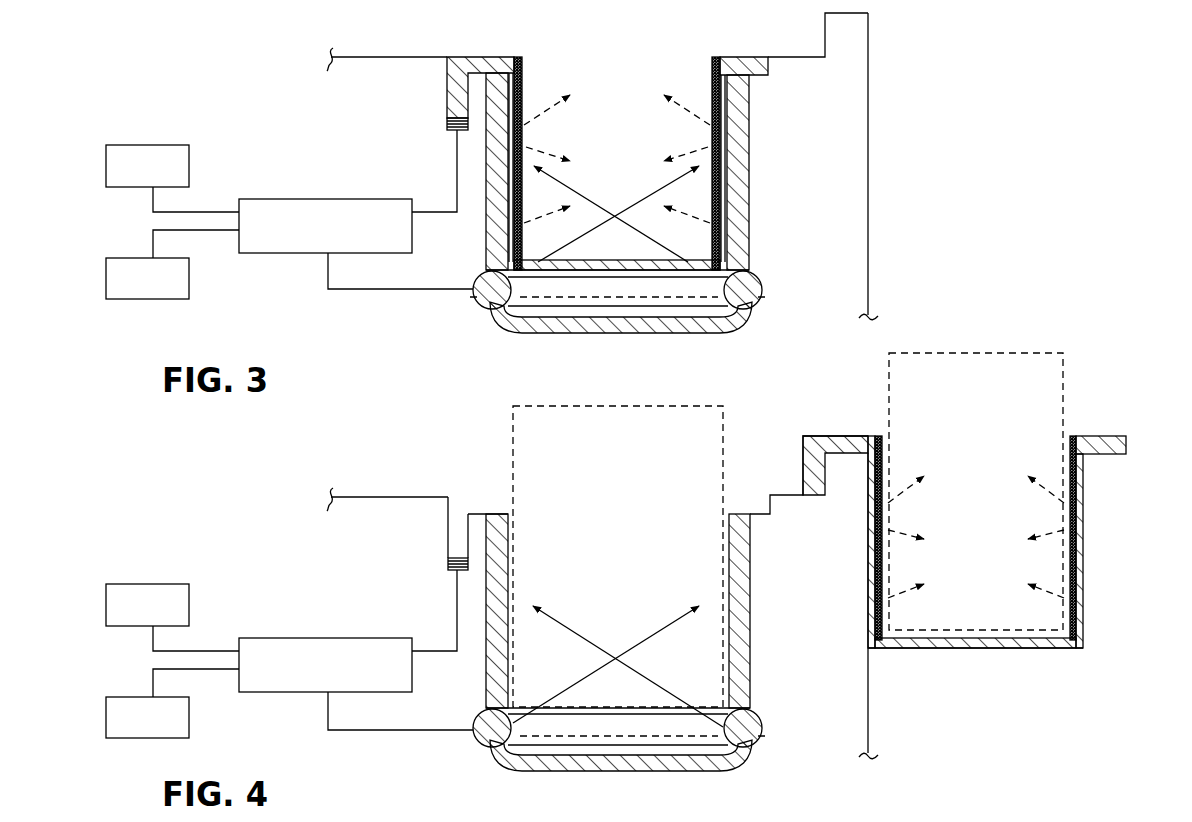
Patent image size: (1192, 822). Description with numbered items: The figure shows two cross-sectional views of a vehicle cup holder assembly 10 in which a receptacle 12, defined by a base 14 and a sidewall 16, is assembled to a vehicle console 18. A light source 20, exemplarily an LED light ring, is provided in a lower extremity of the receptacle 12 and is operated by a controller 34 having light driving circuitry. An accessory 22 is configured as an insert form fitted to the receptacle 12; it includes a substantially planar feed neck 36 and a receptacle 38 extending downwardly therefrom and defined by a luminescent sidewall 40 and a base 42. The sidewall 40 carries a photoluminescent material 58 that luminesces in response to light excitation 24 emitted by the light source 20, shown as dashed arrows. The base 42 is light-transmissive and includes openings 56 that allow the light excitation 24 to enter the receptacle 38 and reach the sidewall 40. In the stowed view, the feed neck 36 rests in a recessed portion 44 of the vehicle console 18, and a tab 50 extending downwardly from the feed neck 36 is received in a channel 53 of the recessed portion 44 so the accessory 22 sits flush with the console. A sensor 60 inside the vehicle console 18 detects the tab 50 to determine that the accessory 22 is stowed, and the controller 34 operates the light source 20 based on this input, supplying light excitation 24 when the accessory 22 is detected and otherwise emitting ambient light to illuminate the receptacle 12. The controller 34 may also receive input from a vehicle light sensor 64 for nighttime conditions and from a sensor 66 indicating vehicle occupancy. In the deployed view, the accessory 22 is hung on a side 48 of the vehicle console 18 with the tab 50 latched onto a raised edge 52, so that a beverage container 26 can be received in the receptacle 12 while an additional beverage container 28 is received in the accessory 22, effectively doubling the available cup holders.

In FIG. 3, the vehicle cup holder assembly 10 is at (941, 84).
In FIG. 4, the vehicle cup holder assembly 10 is at (1141, 371).
In FIG. 4, the receptacle 12 is at (539, 653).
In FIG. 3, the base 14 is at (722, 331).
In FIG. 4, the base 14 is at (722, 770).
In FIG. 3, the sidewall 16 is at (756, 208).
In FIG. 4, the sidewall 16 is at (753, 598).
In FIG. 3, the vehicle console 18 is at (382, 57).
In FIG. 4, the vehicle console 18 is at (382, 497).
In FIG. 3, the light source 20 is at (762, 280).
In FIG. 4, the light source 20 is at (755, 730).
In FIG. 3, the accessory 22 is at (503, 43).
In FIG. 4, the accessory 22 is at (1081, 417).
In FIG. 3, the light excitation 24 is at (648, 198).
In FIG. 4, the light excitation 24 is at (648, 638).
In FIG. 4, the beverage container 26 is at (511, 460).
In FIG. 4, the additional beverage container 28 is at (1068, 386).
In FIG. 3, the controller 34 is at (306, 198).
In FIG. 4, the controller 34 is at (306, 637).
In FIG. 3, the feed neck 36 is at (742, 65).
In FIG. 4, the feed neck 36 is at (1107, 440).
In FIG. 3, the receptacle 38 is at (596, 97).
In FIG. 4, the receptacle 38 is at (1001, 560).
In FIG. 3, the luminescent sidewall 40 is at (730, 140).
In FIG. 4, the luminescent sidewall 40 is at (1086, 580).
In FIG. 3, the base 42 is at (733, 272).
In FIG. 4, the base 42 is at (1072, 645).
In FIG. 4, the recessed portion 44 is at (485, 512).
In FIG. 3, the side 48 is at (842, 173).
In FIG. 4, the side 48 is at (843, 695).
In FIG. 3, the tab 50 is at (455, 93).
In FIG. 4, the tab 50 is at (815, 482).
In FIG. 3, the raised edge 52 is at (847, 43).
In FIG. 4, the raised edge 52 is at (858, 472).
In FIG. 4, the channel 53 is at (455, 536).
In FIG. 3, the openings 56 is at (597, 267).
In FIG. 4, the openings 56 is at (953, 645).
In FIG. 3, the photoluminescent material 58 is at (524, 80).
In FIG. 4, the photoluminescent material 58 is at (882, 457).
In FIG. 3, the sensor 60 is at (455, 127).
In FIG. 4, the sensor 60 is at (452, 568).
In FIG. 3, the vehicle light sensor 64 is at (145, 145).
In FIG. 4, the vehicle light sensor 64 is at (145, 584).
In FIG. 3, the sensor 66 is at (140, 258).
In FIG. 4, the sensor 66 is at (140, 697).